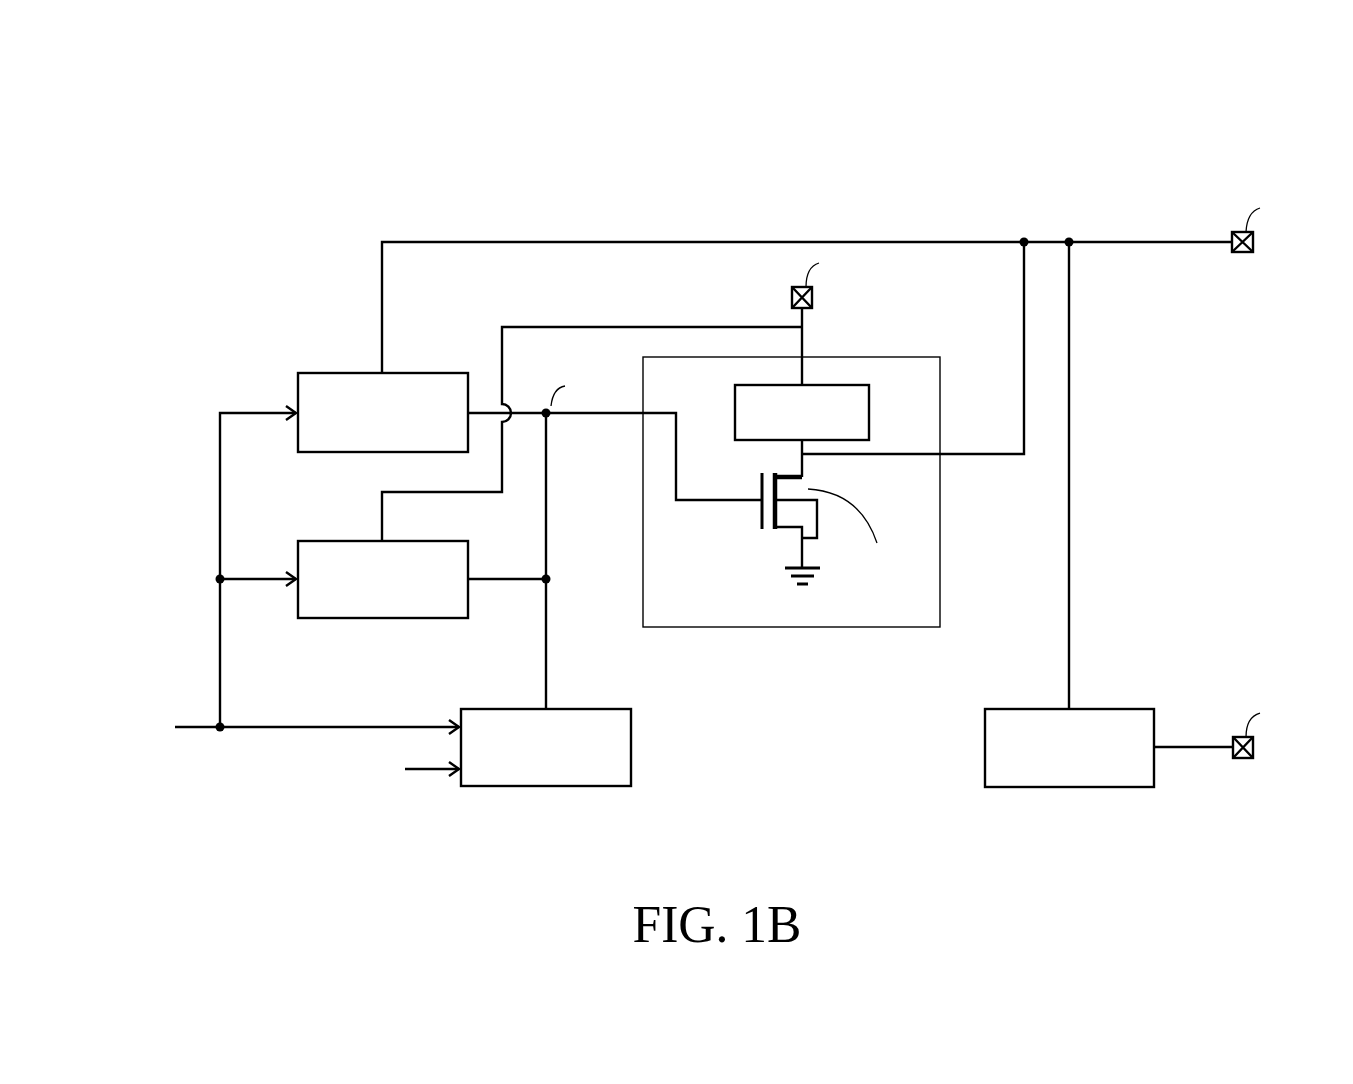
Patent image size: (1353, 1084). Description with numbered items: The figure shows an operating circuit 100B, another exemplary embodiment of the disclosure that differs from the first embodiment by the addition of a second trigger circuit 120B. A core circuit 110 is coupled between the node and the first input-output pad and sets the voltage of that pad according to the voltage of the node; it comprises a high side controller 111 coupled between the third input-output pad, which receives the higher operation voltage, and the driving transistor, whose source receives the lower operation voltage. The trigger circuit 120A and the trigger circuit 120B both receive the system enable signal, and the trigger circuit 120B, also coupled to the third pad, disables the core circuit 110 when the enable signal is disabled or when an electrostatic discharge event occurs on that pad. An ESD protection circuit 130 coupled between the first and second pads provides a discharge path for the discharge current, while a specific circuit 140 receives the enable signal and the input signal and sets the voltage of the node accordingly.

The operating circuit 100B is at (1276, 83).
The core circuit 110 is at (880, 357).
The high side controller 111 is at (778, 427).
The trigger circuit 120A is at (345, 373).
The trigger circuit 120B is at (345, 541).
The ESD protection circuit 130 is at (1098, 709).
The specific circuit 140 is at (573, 709).